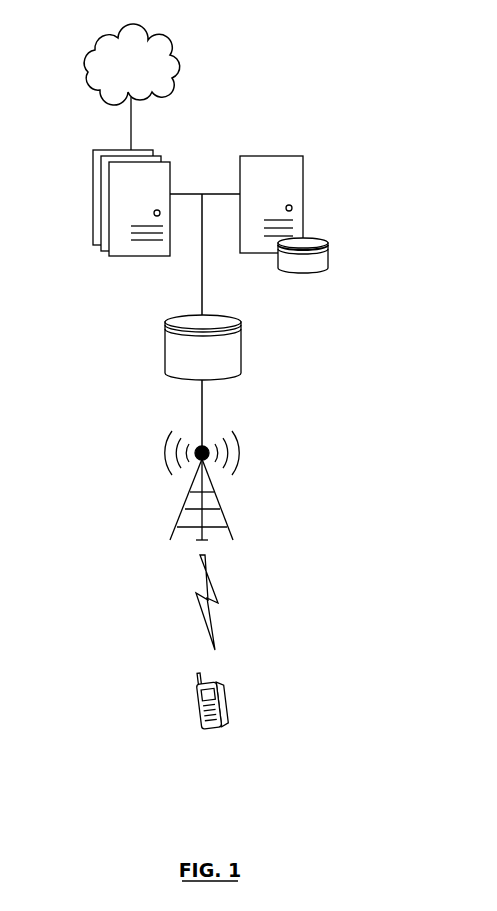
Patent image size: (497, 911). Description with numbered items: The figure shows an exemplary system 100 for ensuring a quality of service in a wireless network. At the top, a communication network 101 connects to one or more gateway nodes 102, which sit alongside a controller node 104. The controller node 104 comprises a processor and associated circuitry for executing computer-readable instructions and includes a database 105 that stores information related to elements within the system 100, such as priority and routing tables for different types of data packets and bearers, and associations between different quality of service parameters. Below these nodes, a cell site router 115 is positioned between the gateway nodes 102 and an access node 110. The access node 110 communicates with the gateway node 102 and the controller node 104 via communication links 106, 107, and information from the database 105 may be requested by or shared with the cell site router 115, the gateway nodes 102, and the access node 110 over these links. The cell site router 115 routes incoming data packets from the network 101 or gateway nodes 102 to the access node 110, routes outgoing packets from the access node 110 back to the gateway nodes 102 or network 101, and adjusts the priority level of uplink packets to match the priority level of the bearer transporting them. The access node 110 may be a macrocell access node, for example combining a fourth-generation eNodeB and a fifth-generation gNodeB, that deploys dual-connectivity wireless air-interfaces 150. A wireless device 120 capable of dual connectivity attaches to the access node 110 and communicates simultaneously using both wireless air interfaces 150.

The system 100 is at (318, 48).
The communication network 101 is at (118, 74).
The gateway node 102 is at (95, 150).
The controller node 104 is at (303, 156).
The database 105 is at (326, 240).
The communication link 106 is at (203, 412).
The communication link 107 is at (202, 297).
The access node 110 is at (188, 500).
The cell site router 115 is at (243, 345).
The wireless device 120 is at (197, 712).
The wireless air-interfaces 150 is at (242, 591).